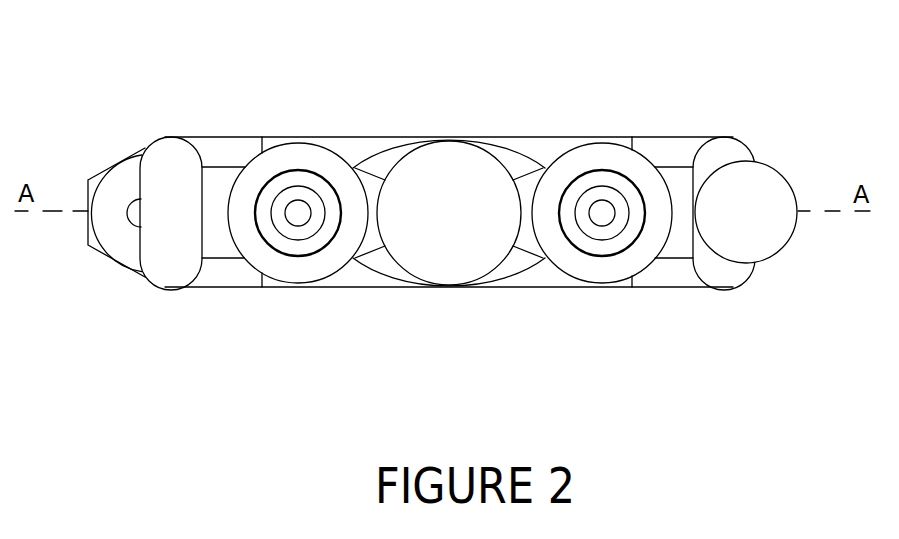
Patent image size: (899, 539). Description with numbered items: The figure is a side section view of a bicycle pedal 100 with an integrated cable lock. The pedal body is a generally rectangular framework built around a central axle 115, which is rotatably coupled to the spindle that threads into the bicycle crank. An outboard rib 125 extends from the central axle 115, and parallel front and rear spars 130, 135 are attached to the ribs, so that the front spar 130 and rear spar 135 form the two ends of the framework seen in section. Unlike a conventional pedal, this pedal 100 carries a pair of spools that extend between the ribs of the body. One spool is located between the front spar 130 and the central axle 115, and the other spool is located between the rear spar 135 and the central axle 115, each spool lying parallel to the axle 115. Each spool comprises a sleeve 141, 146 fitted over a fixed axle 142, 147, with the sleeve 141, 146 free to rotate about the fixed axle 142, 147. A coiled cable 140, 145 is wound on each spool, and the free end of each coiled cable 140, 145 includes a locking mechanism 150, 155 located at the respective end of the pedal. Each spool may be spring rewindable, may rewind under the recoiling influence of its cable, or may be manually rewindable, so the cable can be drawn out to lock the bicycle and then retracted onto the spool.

The bicycle pedal 100 is at (532, 117).
The central axle 115 is at (440, 170).
The outboard rib 125 is at (349, 143).
The front spar 130 is at (180, 257).
The rear spar 135 is at (731, 150).
The coiled cable 140 is at (270, 262).
The sleeve 141 is at (310, 238).
The fixed axle 142 is at (298, 210).
The coiled cable 145 is at (630, 262).
The sleeve 146 is at (588, 238).
The fixed axle 147 is at (602, 212).
The locking mechanism 150 is at (122, 242).
The locking mechanism 155 is at (763, 240).